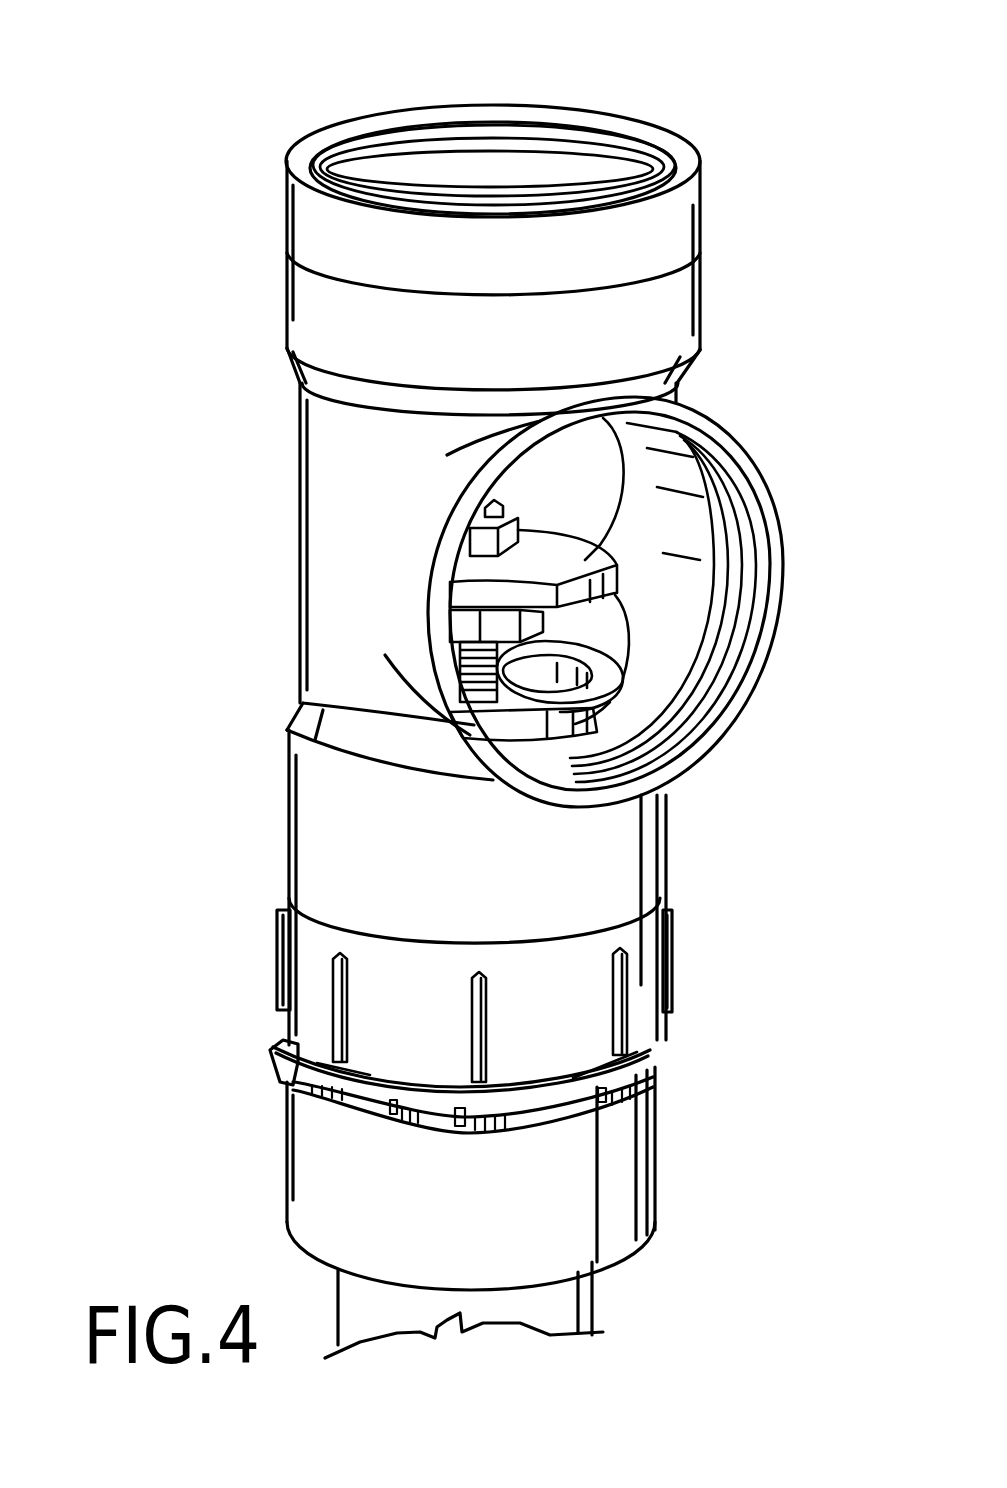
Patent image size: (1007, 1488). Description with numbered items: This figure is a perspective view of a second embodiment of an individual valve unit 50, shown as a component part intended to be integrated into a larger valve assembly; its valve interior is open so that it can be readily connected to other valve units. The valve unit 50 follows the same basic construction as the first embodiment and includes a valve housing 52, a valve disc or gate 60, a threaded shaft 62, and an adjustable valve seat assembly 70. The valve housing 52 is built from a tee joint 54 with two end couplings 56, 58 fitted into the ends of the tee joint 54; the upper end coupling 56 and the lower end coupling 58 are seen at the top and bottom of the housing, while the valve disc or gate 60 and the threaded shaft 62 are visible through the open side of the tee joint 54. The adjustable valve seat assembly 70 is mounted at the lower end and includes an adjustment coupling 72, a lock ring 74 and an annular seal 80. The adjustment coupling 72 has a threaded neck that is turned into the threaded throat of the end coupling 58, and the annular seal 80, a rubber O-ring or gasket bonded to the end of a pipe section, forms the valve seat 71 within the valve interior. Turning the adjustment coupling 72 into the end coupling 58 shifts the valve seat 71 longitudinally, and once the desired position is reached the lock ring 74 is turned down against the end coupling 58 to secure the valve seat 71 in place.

The valve unit 50 is at (162, 120).
The valve housing 52 is at (290, 432).
The tee joint 54 is at (305, 551).
The end coupling 56 is at (678, 233).
The end coupling 58 is at (657, 950).
The valve disc or gate 60 is at (592, 560).
The threaded shaft 62 is at (502, 507).
The adjustable valve seat assembly 70 is at (662, 1158).
The valve seat 71 is at (527, 690).
The adjustment coupling 72 is at (300, 1157).
The lock ring 74 is at (282, 1053).
The annular seal 80 is at (627, 668).